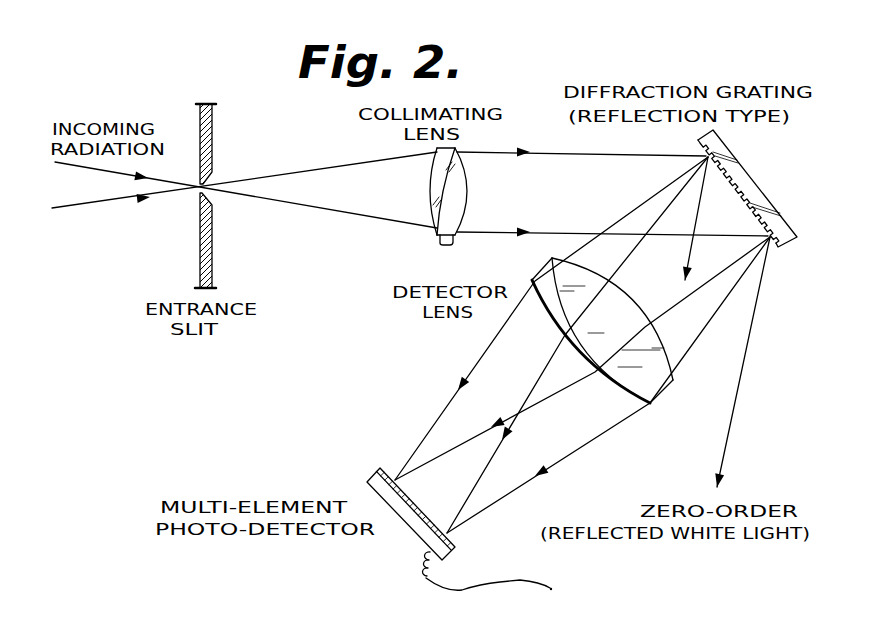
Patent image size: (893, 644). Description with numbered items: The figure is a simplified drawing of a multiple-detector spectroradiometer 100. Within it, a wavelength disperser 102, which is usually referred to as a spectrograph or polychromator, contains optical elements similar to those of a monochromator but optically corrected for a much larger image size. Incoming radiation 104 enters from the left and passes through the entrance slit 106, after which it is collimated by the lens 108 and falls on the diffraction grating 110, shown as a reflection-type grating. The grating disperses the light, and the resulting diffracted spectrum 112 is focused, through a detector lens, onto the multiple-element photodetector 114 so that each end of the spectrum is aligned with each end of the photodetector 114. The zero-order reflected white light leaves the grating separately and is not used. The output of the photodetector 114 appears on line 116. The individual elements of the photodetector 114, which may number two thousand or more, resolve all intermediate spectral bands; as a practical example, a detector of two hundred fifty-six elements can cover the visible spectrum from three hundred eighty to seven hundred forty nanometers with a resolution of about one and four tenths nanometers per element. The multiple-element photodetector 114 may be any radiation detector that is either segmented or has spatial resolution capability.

The multiple-detector spectroradiometer 100 is at (448, 348).
The wavelength disperser 102 is at (777, 266).
The incoming radiation 104 is at (78, 185).
The entrance slit 106 is at (208, 178).
The lens 108 is at (445, 238).
The diffraction grating 110 is at (757, 193).
The diffracted spectrum 112 is at (688, 317).
The multiple-element photodetector 114 is at (372, 477).
The line 116 is at (460, 592).